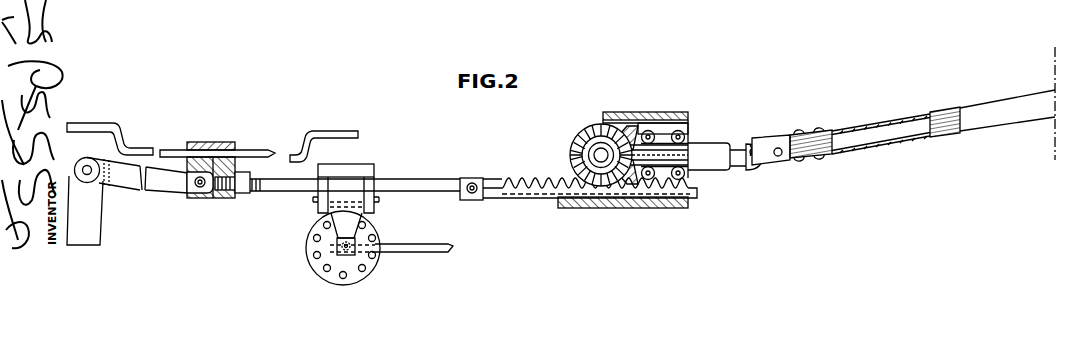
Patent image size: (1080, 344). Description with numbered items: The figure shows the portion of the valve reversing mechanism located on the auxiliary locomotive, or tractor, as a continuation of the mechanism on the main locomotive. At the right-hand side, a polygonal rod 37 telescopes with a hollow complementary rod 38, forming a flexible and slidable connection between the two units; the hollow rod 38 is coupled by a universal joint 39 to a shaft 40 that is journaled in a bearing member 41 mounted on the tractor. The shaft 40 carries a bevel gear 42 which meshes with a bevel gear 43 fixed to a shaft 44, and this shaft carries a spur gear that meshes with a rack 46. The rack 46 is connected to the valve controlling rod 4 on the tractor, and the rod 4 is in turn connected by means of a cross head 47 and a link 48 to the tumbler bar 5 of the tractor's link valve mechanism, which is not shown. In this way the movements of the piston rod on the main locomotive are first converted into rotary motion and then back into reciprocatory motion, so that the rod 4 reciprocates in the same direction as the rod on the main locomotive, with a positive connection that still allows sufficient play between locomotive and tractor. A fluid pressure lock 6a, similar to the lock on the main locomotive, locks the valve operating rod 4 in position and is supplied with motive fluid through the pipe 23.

The rod 4 is at (414, 185).
The tumbler bar 5 is at (92, 217).
The fluid pressure lock 6a is at (371, 267).
The pipe 23 is at (442, 248).
The polygonal rod 37 is at (943, 130).
The hollow complementary rod 38 is at (1003, 100).
The universal joint 39 is at (762, 164).
The shaft 40 is at (684, 152).
The bearing member 41 is at (680, 117).
The bevel gear 42 is at (634, 175).
The bevel gear 43 is at (590, 125).
The shaft 44 is at (600, 155).
The rack 46 is at (540, 198).
The cross head 47 is at (223, 133).
The link 48 is at (178, 186).